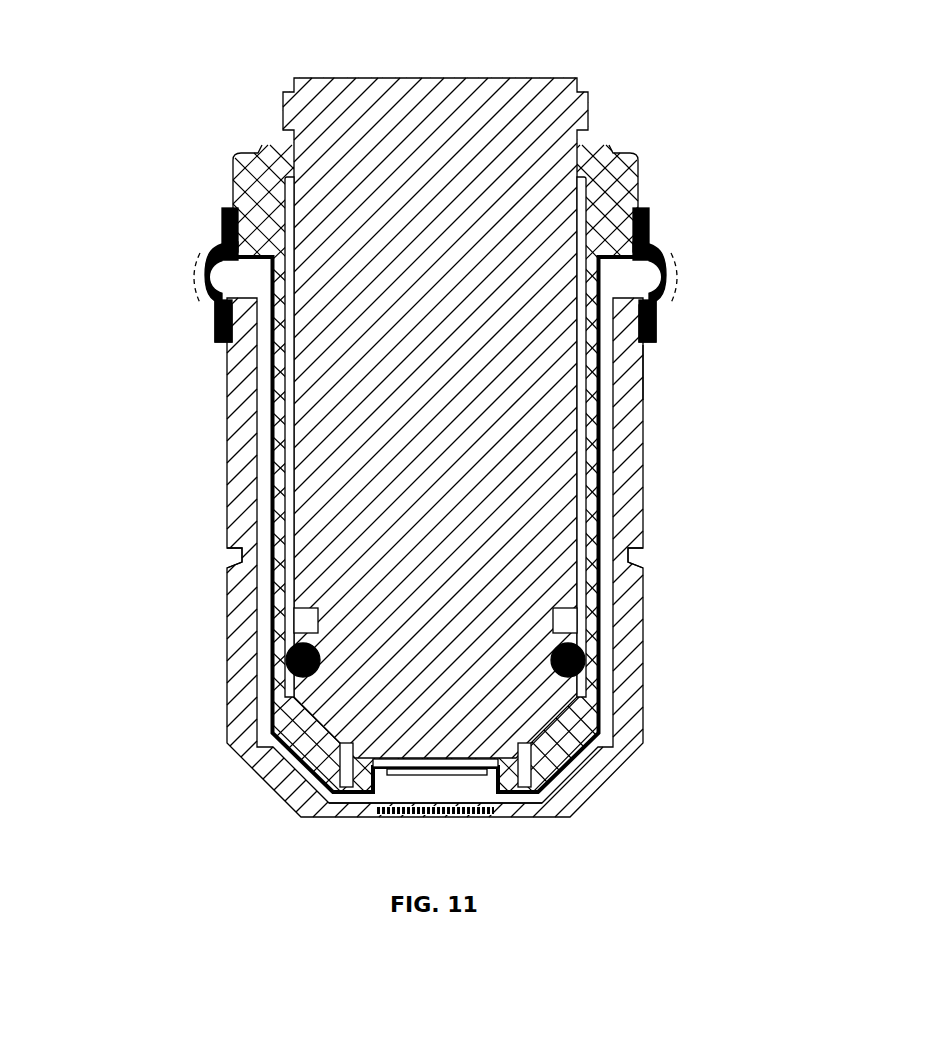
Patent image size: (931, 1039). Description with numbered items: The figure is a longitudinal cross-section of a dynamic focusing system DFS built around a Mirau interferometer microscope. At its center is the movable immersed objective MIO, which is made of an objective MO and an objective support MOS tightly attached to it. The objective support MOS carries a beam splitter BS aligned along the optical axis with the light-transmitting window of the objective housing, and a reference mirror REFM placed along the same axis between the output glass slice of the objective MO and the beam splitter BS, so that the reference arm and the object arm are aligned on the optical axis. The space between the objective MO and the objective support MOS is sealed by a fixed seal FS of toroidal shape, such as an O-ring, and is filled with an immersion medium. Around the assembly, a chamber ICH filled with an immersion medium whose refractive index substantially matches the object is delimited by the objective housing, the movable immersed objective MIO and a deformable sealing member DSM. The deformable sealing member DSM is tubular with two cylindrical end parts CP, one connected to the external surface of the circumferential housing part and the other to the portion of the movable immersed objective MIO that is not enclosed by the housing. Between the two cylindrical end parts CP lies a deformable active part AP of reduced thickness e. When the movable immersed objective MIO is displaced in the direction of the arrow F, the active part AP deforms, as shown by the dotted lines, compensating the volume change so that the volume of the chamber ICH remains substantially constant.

The objective MO is at (589, 100).
The objective support MOS is at (636, 178).
The movable immersed objective MIO is at (742, 108).
The cylindrical end part CP is at (698, 338).
The reduced thickness e is at (671, 269).
The deformable active part AP is at (666, 284).
The deformable sealing member DSM is at (656, 334).
The dynamic focusing system DFS is at (203, 401).
The chamber ICH is at (265, 612).
The fixed seal FS is at (292, 660).
The reference mirror REFM is at (490, 770).
The beam splitter BS is at (500, 792).
The arrow F is at (438, 32).